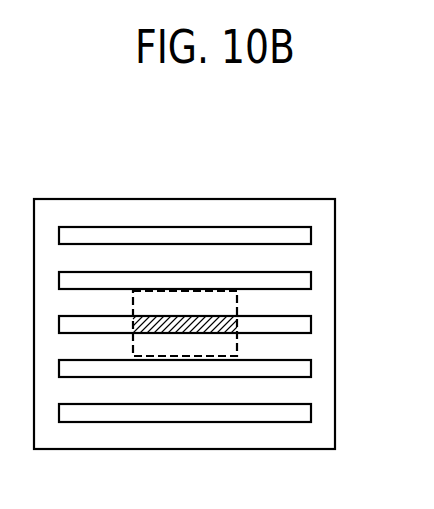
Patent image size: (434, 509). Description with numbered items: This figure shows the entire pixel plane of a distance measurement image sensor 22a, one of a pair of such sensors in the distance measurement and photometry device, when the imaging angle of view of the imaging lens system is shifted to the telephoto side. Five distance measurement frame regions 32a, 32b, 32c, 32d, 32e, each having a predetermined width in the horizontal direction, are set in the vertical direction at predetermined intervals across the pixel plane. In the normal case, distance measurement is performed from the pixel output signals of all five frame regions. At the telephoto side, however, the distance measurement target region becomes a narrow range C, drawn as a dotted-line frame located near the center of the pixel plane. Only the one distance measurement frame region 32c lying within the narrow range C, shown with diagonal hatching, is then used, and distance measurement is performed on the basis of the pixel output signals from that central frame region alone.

The distance measurement image sensor 22a is at (283, 167).
The distance measurement frame region 32a is at (311, 235).
The distance measurement frame region 32b is at (311, 280).
The distance measurement frame region 32c is at (311, 324).
The distance measurement frame region 32d is at (311, 368).
The distance measurement frame region 32e is at (311, 413).
The narrow range C is at (237, 347).